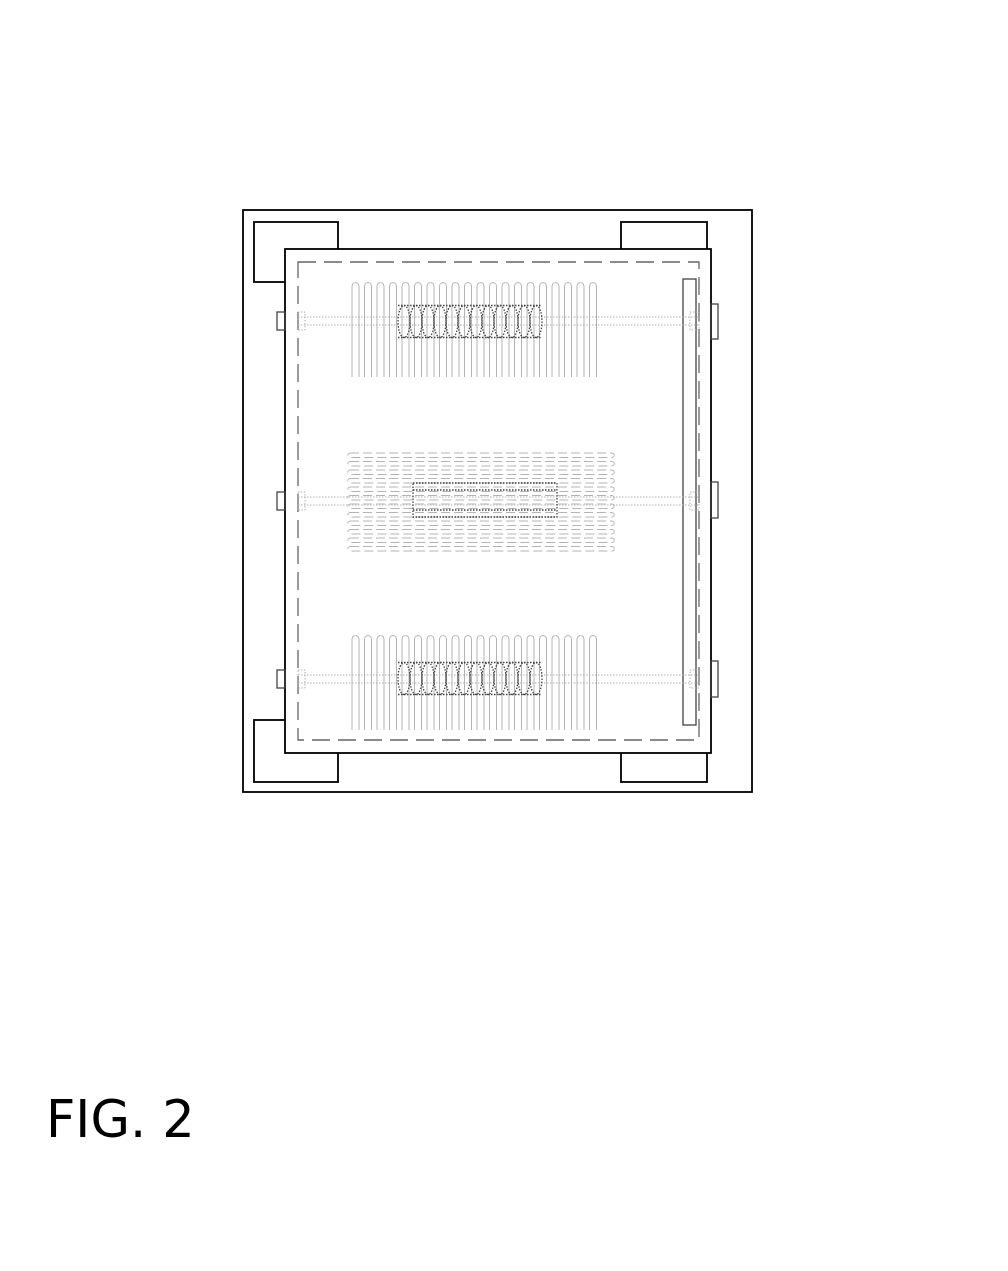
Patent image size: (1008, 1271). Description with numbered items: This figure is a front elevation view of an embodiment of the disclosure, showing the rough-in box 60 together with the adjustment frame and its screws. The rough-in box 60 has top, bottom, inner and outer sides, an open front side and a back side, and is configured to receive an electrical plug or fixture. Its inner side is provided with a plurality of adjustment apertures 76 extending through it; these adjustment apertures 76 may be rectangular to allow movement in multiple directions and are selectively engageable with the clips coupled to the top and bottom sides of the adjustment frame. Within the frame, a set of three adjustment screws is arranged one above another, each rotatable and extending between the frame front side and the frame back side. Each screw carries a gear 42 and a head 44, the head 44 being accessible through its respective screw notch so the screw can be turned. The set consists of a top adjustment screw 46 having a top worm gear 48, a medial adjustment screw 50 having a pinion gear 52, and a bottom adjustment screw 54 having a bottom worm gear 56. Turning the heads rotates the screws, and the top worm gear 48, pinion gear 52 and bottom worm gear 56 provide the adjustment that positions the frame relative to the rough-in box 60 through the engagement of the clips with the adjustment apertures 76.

The adjustment apertures 76 is at (290, 237).
The rough-in box 60 is at (728, 575).
The head 44 is at (718, 322).
The gear 42 is at (498, 240).
The top adjustment screw 46 is at (337, 322).
The top worm gear 48 is at (431, 322).
The medial adjustment screw 50 is at (318, 505).
The pinion gear 52 is at (435, 495).
The bottom adjustment screw 54 is at (335, 682).
The bottom worm gear 56 is at (468, 678).